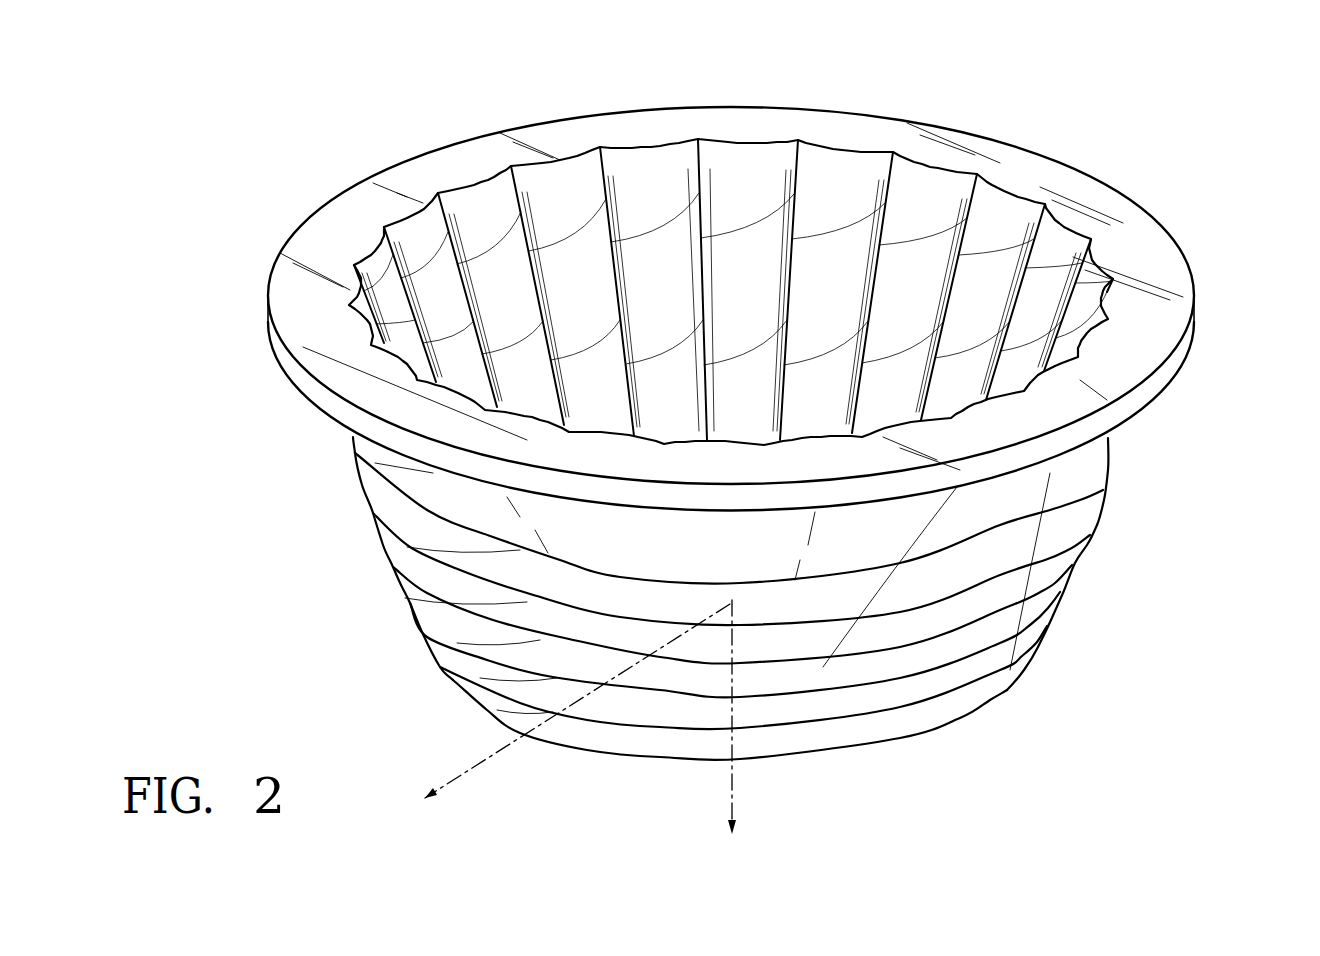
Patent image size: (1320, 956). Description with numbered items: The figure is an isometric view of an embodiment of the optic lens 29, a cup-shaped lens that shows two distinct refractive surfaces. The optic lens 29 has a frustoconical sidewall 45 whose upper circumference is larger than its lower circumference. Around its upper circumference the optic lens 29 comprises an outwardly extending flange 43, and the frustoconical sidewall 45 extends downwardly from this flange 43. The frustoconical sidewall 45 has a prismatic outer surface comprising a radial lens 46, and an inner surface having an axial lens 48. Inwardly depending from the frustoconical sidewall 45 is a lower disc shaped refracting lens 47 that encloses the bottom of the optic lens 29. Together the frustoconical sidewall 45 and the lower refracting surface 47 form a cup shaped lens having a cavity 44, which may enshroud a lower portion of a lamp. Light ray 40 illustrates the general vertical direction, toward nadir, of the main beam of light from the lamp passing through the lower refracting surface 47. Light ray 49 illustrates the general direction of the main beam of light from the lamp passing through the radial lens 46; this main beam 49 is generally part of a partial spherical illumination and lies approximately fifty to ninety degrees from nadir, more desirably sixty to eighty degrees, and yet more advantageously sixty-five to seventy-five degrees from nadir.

The optic lens 29 is at (1107, 127).
The flange 43 is at (1186, 345).
The cavity 44 is at (823, 178).
The axial lens 48 is at (471, 207).
The frustoconical sidewall 45 is at (362, 507).
The radial lens 46 is at (1000, 503).
The lower disc shaped refracting lens 47 is at (919, 738).
The light ray 40 is at (730, 734).
The light ray 49 is at (558, 715).